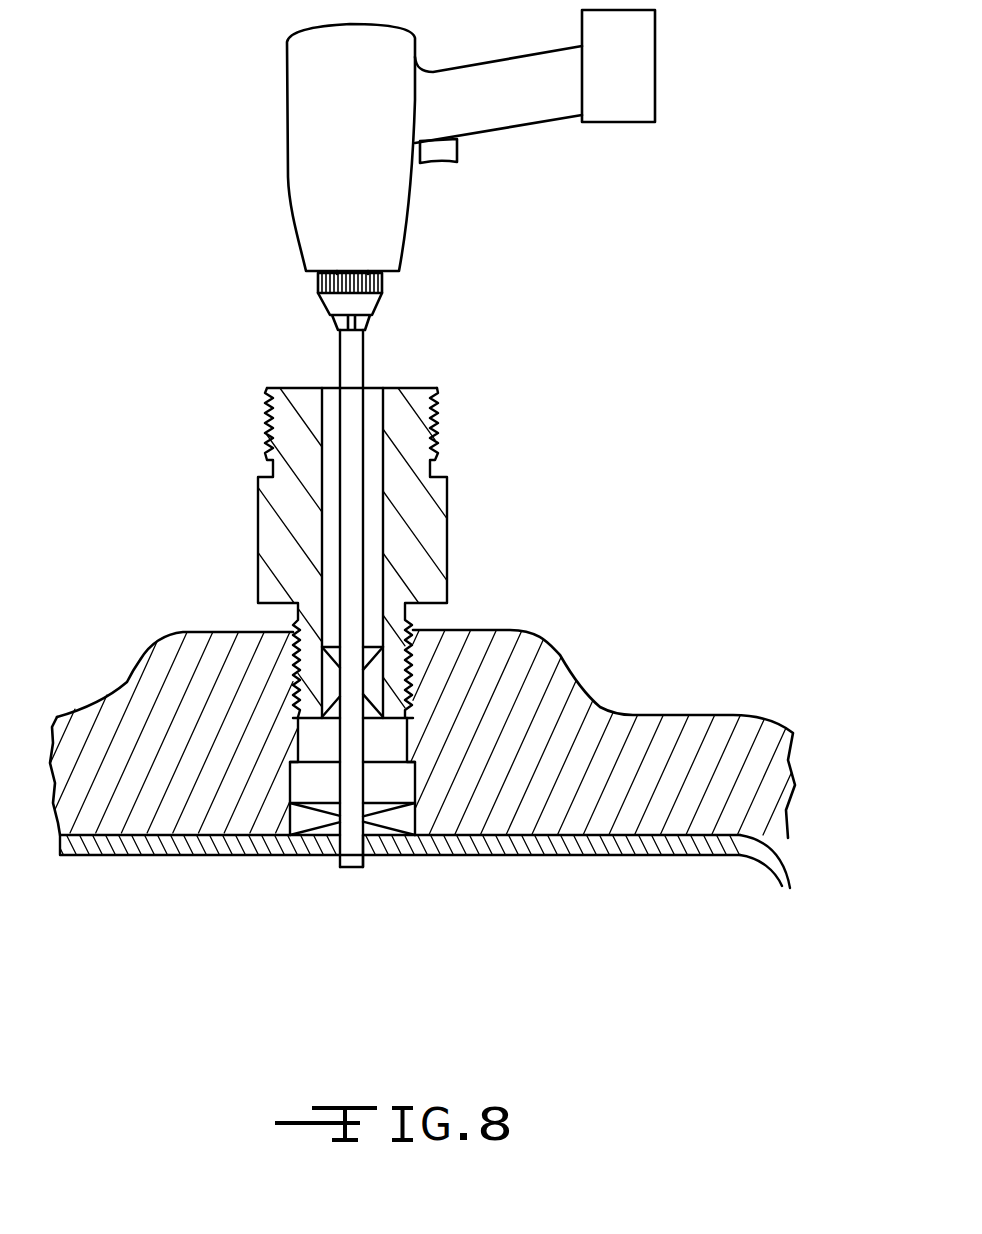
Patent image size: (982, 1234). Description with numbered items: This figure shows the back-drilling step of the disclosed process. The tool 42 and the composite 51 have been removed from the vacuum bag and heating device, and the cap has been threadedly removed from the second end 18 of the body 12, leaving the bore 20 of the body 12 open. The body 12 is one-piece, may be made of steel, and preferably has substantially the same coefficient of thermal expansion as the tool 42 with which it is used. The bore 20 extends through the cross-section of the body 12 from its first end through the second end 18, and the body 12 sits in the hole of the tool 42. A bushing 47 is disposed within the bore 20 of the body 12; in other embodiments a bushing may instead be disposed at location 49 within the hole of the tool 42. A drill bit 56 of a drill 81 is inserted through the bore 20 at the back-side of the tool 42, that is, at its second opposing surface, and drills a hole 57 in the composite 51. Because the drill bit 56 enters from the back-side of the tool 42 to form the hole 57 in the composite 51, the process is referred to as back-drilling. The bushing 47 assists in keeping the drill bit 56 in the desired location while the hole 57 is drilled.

The drill 81 is at (287, 178).
The body 12 is at (438, 447).
The second end 18 is at (398, 388).
The bore 20 is at (333, 405).
The bushing 47 is at (373, 647).
The tool 42 is at (520, 697).
The location 49 is at (403, 817).
The composite 51 is at (523, 843).
The drill bit 56 is at (340, 862).
The hole 57 is at (363, 843).